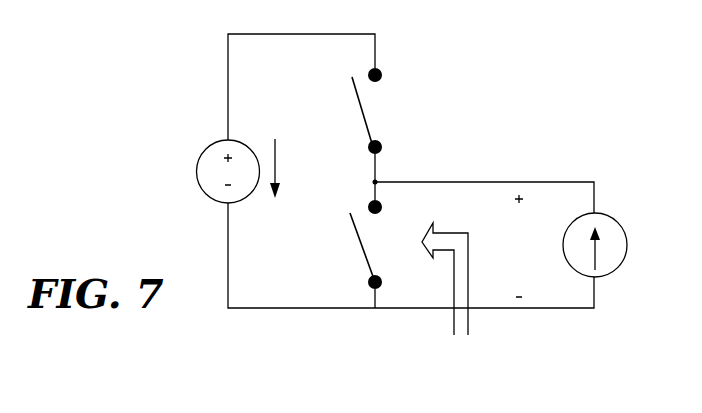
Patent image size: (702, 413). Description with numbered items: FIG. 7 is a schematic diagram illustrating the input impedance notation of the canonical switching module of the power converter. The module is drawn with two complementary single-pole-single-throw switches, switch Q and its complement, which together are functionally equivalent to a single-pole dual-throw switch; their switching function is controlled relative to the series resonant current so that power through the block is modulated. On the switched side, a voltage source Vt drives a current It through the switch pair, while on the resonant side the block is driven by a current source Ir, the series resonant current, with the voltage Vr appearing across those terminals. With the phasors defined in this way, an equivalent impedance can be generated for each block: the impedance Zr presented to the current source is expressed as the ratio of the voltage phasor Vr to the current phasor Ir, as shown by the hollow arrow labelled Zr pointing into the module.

The switched output voltage phasor Vt is at (213, 171).
The switched output current phasor It is at (283, 168).
The first single-pole-single-throw switch Q is at (386, 107).
The resonant voltage phasor Vr is at (518, 246).
The series resonant current phasor Ir is at (607, 245).
The equivalent input impedance Zr is at (448, 296).